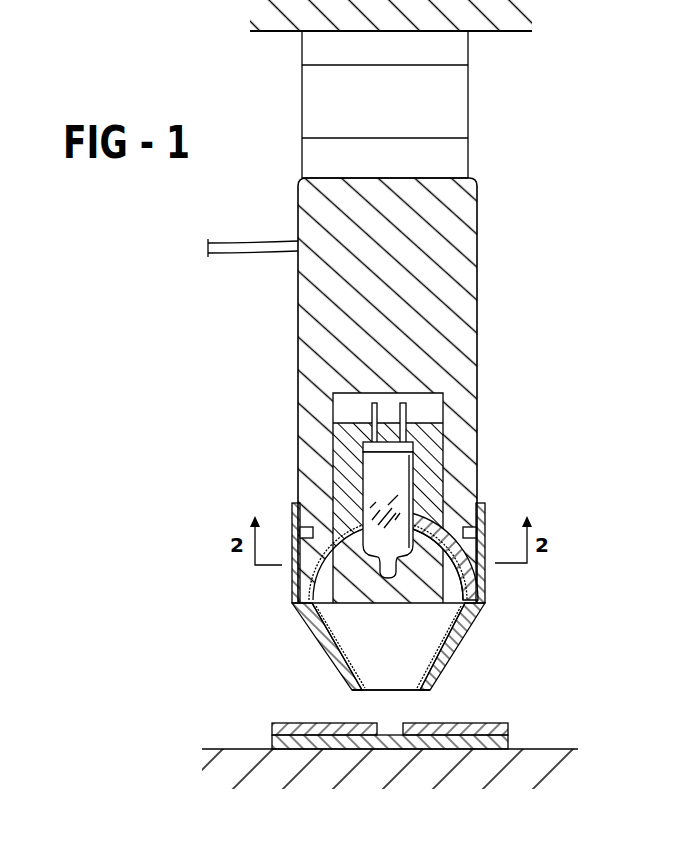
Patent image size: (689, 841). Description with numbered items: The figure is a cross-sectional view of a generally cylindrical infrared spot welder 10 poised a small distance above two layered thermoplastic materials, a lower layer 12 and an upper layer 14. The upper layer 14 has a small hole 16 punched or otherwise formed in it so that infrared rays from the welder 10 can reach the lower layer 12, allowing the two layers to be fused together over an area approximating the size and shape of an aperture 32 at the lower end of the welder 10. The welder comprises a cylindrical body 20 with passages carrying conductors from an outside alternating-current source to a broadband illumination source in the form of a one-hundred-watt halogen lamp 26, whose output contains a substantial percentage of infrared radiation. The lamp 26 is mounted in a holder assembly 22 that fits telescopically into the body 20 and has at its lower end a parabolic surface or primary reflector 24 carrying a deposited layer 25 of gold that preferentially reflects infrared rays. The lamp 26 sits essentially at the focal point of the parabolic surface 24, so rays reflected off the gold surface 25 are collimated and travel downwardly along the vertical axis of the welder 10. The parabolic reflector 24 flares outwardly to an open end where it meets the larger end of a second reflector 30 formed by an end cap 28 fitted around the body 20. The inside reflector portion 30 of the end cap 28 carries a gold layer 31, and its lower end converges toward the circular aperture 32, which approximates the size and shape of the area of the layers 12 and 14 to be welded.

The infrared spot welder 10 is at (284, 375).
The lower layer of thermoplastic material 12 is at (272, 743).
The upper layer of thermoplastic material 14 is at (272, 730).
The hole 16 is at (387, 728).
The cylindrical body 20 is at (477, 298).
The holder assembly 22 is at (445, 445).
The parabolic surface (primary reflector) 24 is at (335, 589).
The layer of gold 25 is at (445, 540).
The halogen lamp 26 is at (378, 478).
The end cap 28 is at (447, 650).
The second reflector 30 is at (452, 632).
The layer of gold 31 is at (340, 672).
The aperture 32 is at (377, 695).